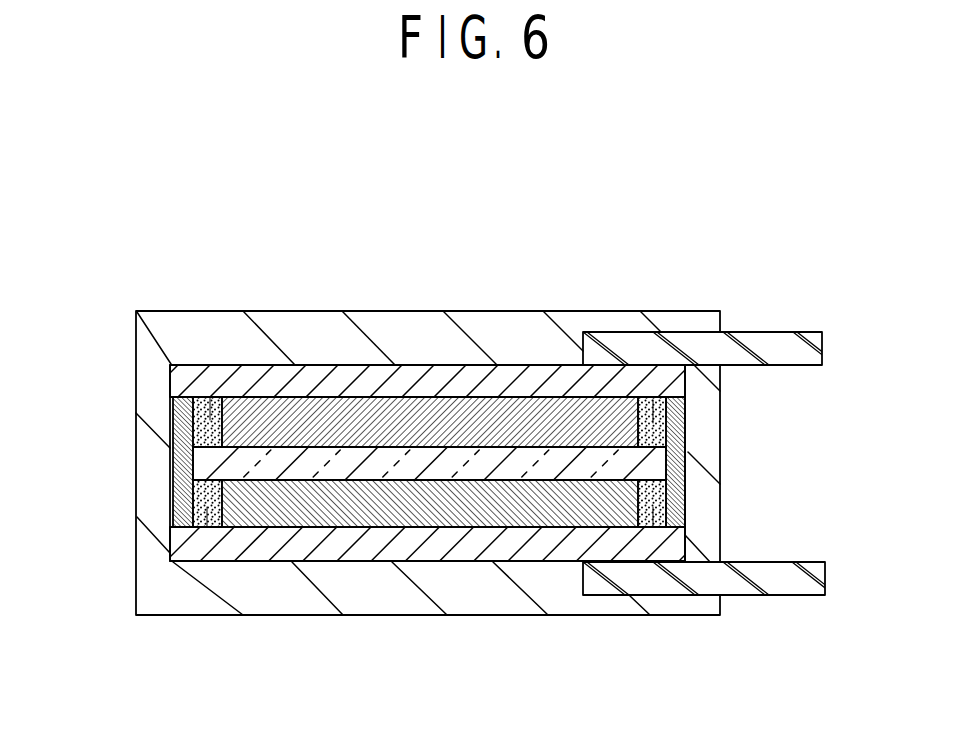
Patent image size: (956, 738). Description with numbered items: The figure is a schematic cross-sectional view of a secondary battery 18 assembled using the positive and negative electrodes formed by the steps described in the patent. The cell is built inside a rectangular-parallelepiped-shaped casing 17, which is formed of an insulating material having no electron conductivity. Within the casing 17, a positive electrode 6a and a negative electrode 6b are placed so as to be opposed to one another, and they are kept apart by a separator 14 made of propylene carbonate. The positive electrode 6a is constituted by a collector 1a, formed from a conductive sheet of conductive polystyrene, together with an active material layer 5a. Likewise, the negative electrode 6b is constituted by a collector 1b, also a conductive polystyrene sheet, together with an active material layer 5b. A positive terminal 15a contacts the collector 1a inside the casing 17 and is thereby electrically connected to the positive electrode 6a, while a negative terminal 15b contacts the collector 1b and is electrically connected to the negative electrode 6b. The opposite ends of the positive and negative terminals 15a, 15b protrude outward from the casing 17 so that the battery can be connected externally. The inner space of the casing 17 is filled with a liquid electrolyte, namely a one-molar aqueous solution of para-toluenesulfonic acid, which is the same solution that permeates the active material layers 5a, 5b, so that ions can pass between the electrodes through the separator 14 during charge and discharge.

The secondary battery 18 is at (94, 235).
The casing 17 is at (707, 383).
The positive terminal 15a is at (793, 350).
The negative terminal 15b is at (778, 580).
The collector 1a is at (315, 378).
The collector 1b is at (310, 547).
The active material layer 5a is at (472, 427).
The active material layer 5b is at (466, 497).
The positive electrode 6a is at (370, 349).
The negative electrode 6b is at (382, 582).
The separator 14 is at (617, 462).